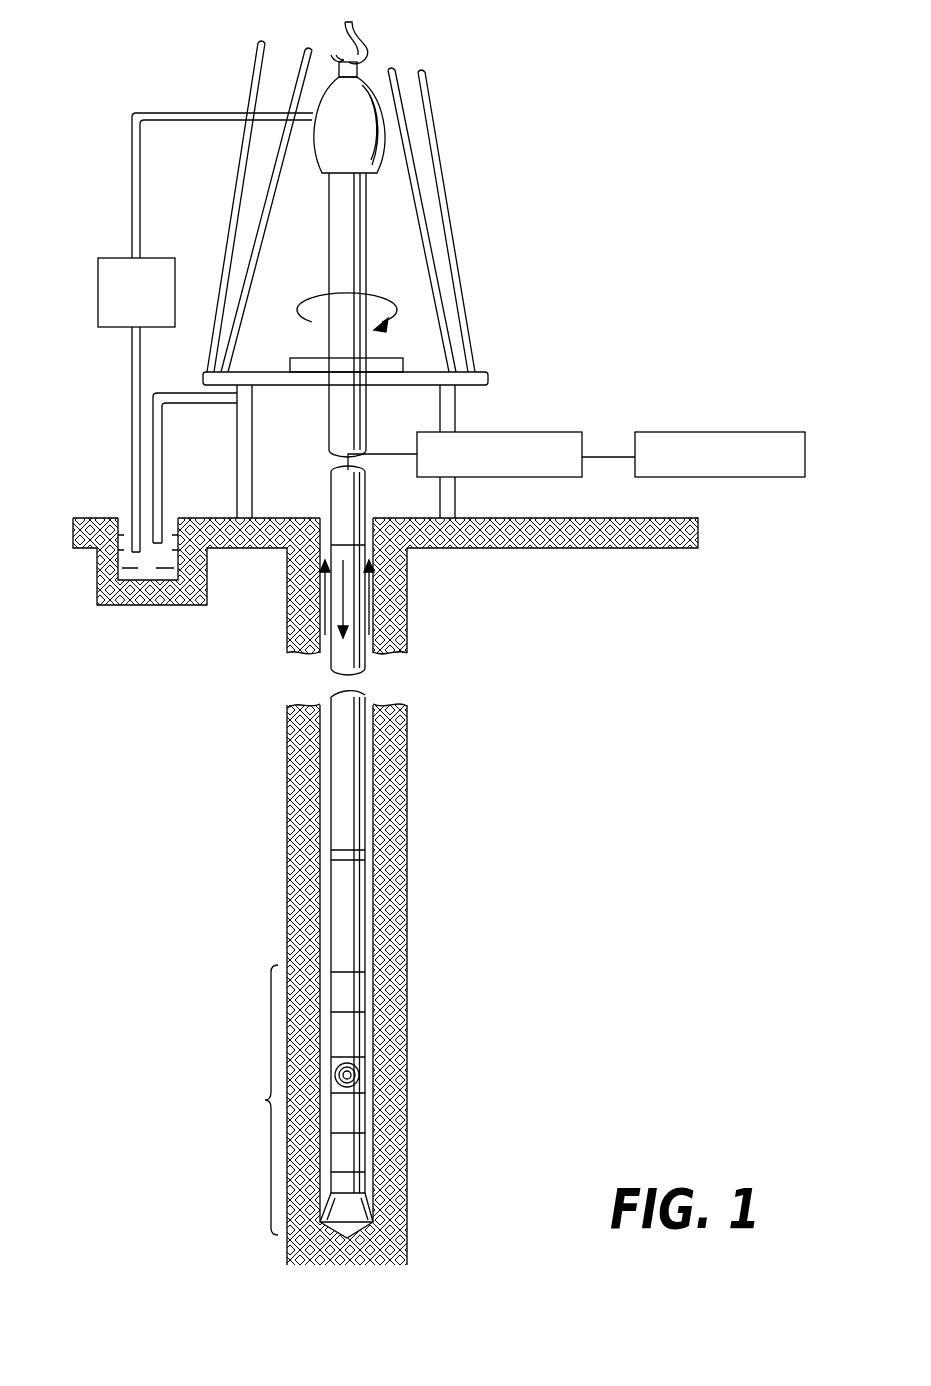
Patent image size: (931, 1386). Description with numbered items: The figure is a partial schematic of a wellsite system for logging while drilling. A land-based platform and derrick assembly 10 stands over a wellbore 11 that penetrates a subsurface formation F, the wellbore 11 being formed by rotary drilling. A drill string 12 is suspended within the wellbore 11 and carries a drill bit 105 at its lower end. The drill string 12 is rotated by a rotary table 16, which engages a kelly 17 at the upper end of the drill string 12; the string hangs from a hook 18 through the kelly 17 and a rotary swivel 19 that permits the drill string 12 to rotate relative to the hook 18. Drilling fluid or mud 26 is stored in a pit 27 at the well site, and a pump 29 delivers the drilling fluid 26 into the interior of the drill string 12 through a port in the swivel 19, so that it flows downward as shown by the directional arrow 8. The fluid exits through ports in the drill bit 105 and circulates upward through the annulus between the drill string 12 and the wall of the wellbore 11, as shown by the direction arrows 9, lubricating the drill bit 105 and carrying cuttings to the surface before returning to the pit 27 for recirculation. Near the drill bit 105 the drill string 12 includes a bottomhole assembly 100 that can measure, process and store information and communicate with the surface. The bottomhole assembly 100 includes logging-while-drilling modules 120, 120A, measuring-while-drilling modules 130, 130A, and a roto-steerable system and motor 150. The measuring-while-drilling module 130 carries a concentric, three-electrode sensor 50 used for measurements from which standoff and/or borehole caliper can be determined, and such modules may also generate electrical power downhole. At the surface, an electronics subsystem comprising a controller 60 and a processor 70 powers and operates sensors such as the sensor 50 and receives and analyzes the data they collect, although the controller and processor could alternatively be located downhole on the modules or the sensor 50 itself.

The platform and derrick assembly 10 is at (500, 62).
The hook 18 is at (362, 40).
The rotary swivel 19 is at (318, 170).
The pump 29 is at (98, 278).
The pit 27 is at (125, 518).
The drilling fluid 26 is at (158, 582).
The rotary table 16 is at (386, 357).
The kelly 17 is at (338, 338).
The drill string 12 is at (345, 542).
The wellbore 11 is at (374, 520).
The directional arrow 8 is at (335, 629).
The direction arrows 9 is at (319, 597).
The controller 60 is at (521, 432).
The processor 70 is at (678, 432).
The subsurface formation F is at (497, 548).
The bottomhole assembly 100 is at (246, 1100).
The logging-while-drilling module 120 is at (352, 1034).
The measuring-while-drilling module 130 is at (357, 1062).
The sensor 50 is at (358, 1082).
The logging-while-drilling module 120A is at (352, 1113).
The measuring-while-drilling module 130A is at (352, 1158).
The roto-steerable system and motor 150 is at (352, 1183).
The drill bit 105 is at (352, 1215).